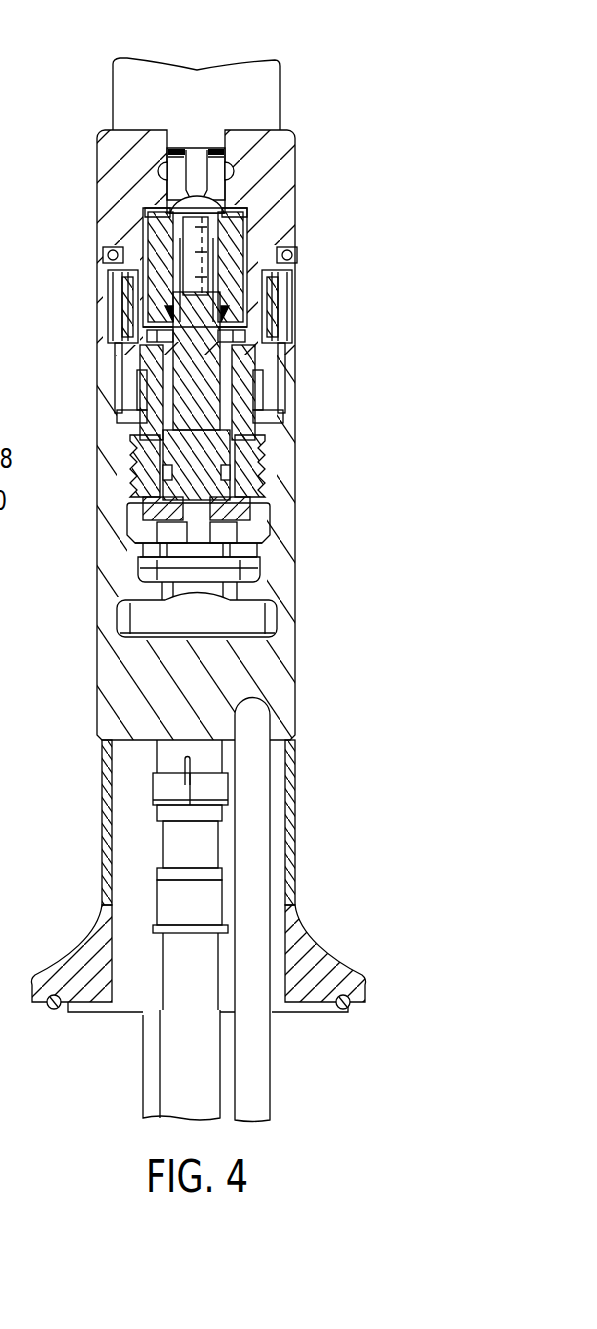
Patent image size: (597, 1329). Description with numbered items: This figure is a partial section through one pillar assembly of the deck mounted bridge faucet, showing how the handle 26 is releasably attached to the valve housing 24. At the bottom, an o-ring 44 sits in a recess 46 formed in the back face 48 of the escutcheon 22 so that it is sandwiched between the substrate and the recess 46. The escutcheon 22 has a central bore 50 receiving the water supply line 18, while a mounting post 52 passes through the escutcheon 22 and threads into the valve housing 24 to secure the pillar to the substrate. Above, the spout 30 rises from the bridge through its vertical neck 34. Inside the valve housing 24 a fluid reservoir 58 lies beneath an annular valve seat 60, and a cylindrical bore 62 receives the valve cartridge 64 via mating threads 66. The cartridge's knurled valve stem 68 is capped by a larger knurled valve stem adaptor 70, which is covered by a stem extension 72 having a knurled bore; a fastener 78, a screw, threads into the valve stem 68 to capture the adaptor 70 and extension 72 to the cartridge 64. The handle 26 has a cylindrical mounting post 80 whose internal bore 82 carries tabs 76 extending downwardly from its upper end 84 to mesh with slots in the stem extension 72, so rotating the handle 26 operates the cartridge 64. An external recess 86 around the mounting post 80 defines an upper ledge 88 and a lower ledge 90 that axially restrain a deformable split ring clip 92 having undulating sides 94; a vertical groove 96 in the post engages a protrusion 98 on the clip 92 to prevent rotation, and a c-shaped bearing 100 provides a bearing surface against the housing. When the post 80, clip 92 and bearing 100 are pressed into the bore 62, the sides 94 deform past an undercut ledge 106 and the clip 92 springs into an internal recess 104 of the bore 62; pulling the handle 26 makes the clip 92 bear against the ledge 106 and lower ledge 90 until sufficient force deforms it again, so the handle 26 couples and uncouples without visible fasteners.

The hot water supply line 18 is at (128, 1065).
The escutcheon 22 is at (200, 901).
The valve housing 24 is at (297, 682).
The handle 26 is at (298, 136).
The spout 30 is at (187, 75).
The vertical neck 34 is at (280, 68).
The o-ring 44 is at (320, 1015).
The recess 46 is at (352, 988).
The back face 48 is at (80, 1008).
The central bore 50 is at (148, 858).
The mounting post 52 is at (273, 808).
The fluid reservoir 58 is at (212, 628).
The annular valve seat 60 is at (261, 573).
The cylindrical bore 62 is at (117, 413).
The valve cartridge 64 is at (273, 417).
The mating threads 66 is at (262, 463).
The knurled valve stem 68 is at (170, 258).
The valve stem adaptor 70 is at (149, 222).
The stem extension 72 is at (186, 259).
The tabs 76 is at (199, 150).
The fastener 78 is at (166, 198).
The mounting post 80 is at (285, 353).
The internal bore 82 is at (61, 248).
The upper end 84 is at (176, 148).
The external recess 86 is at (253, 318).
The upper ledge 88 is at (103, 258).
The lower ledge 90 is at (120, 359).
The split ring clip 92 is at (302, 306).
The undulating sides 94 is at (280, 330).
The vertical groove 96 is at (85, 306).
The protrusion 98 is at (123, 368).
The c-shaped bearing 100 is at (288, 250).
The internal recess 104 is at (140, 297).
The undercut ledge 106 is at (315, 238).